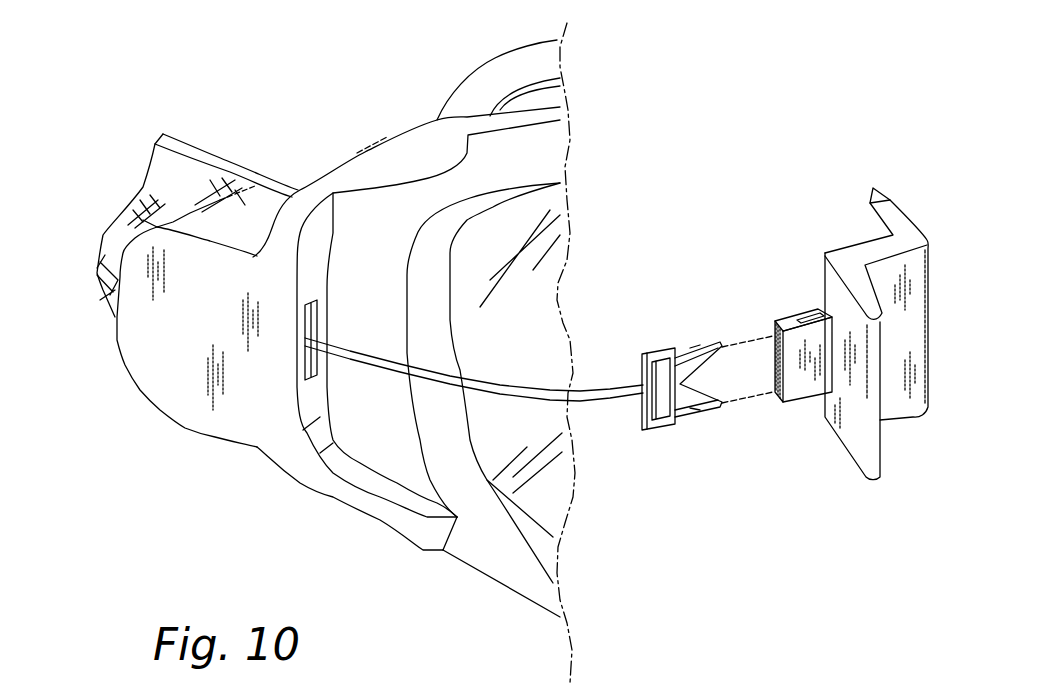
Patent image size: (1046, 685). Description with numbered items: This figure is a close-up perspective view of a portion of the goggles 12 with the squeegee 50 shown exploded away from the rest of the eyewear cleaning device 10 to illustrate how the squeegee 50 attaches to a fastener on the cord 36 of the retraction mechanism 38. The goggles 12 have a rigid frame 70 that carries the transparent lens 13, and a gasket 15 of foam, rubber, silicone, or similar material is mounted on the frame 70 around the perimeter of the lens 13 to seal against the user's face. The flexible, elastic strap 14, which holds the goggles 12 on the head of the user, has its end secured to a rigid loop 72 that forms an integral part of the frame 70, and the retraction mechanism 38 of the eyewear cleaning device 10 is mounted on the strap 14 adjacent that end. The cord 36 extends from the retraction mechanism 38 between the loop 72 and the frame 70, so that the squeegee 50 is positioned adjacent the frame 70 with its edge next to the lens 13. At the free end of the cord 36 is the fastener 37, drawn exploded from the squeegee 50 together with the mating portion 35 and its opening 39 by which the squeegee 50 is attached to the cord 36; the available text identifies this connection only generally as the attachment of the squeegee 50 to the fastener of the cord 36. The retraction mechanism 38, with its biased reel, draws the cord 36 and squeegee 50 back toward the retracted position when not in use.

The eyewear cleaning device 10 is at (138, 460).
The goggles 12 is at (481, 550).
The transparent lens 13 is at (543, 228).
The strap 14 is at (185, 148).
The gasket 15 is at (477, 88).
The receiver block 35 is at (805, 390).
The cord 36 is at (645, 402).
The buckle connector 37 is at (668, 423).
The retraction mechanism 38 is at (153, 375).
The receiving slot 39 is at (777, 333).
The squeegee 50 is at (811, 197).
The rigid frame 70 is at (410, 480).
The rigid loop 72 is at (300, 487).